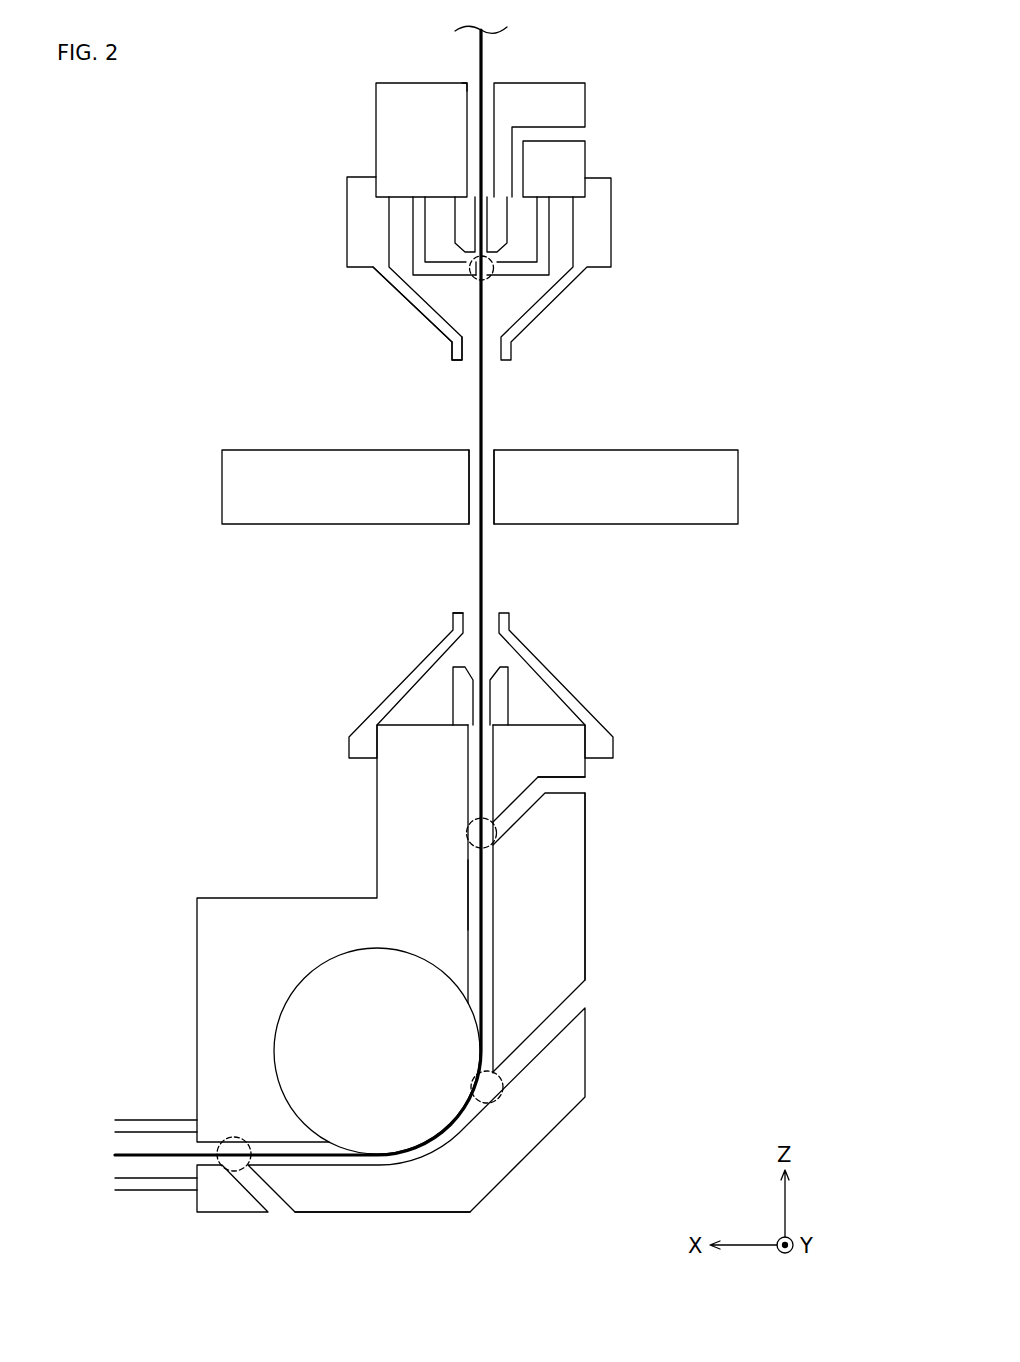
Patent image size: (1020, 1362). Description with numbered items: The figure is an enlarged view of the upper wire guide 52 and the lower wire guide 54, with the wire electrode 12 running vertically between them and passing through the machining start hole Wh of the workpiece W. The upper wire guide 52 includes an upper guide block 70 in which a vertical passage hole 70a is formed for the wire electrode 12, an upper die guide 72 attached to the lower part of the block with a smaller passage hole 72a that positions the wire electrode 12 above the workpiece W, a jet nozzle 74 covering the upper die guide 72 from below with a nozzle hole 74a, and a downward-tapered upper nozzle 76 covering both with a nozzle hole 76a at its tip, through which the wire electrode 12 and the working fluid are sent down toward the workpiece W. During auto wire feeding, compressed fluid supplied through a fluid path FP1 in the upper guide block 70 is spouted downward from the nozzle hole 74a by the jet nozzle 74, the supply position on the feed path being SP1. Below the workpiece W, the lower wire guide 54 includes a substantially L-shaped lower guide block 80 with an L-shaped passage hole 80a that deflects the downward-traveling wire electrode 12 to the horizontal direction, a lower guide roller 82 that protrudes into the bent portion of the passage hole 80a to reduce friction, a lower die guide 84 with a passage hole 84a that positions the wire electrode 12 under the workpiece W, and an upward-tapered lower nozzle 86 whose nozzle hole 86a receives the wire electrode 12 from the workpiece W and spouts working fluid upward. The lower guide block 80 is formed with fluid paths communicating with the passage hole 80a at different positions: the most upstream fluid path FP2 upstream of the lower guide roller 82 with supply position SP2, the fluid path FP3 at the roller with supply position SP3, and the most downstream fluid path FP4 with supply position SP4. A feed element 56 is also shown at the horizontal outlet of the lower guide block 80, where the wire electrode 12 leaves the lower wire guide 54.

The wire electrode 12 is at (486, 396).
The upper wire guide 52 is at (576, 62).
The lower wire guide 54 is at (604, 906).
The wire feed pipe 56 is at (150, 1126).
The upper guide block 70 is at (392, 108).
The passage hole 70a is at (472, 90).
The upper die guide 72 is at (462, 226).
The passage hole 72a is at (486, 218).
The jet nozzle 74 is at (543, 272).
The nozzle hole 74a is at (486, 276).
The upper nozzle 76 is at (437, 332).
The nozzle hole 76a is at (468, 355).
The lower guide block 80 is at (207, 921).
The passage hole 80a is at (489, 886).
The lower guide roller 82 is at (338, 996).
The lower die guide 84 is at (499, 683).
The passage hole 84a is at (478, 704).
The lower nozzle 86 is at (432, 652).
The nozzle hole 86a is at (466, 610).
The workpiece W is at (238, 476).
The machining start hole Wh is at (488, 520).
The fluid path FP1 is at (576, 128).
The fluid path FP2 is at (576, 783).
The fluid path FP3 is at (577, 998).
The fluid path FP4 is at (283, 1200).
The supply position SP1 is at (472, 276).
The supply position SP2 is at (466, 834).
The supply position SP3 is at (496, 1102).
The supply position SP4 is at (232, 1138).